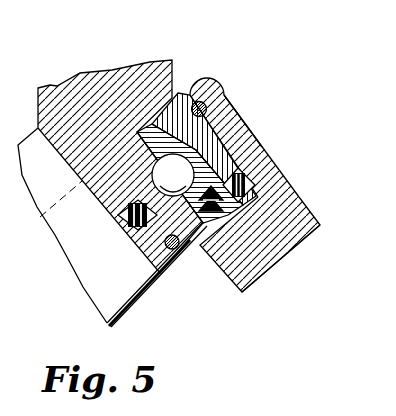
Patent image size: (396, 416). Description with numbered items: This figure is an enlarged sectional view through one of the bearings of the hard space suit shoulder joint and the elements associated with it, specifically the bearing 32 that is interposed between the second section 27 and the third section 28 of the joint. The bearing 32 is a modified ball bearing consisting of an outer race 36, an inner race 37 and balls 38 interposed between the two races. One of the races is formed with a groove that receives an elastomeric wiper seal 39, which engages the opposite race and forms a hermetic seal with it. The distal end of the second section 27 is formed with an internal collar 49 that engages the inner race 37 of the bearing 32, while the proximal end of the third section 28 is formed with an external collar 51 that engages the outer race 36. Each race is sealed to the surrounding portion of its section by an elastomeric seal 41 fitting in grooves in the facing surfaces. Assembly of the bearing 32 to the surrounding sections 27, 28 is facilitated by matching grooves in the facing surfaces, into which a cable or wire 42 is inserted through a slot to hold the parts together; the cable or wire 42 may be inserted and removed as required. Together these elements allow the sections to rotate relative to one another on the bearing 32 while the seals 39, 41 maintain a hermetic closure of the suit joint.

The second section 27 is at (101, 88).
The third section 28 is at (298, 198).
The bearing 32 is at (221, 108).
The outer race 36 is at (148, 263).
The inner race 37 is at (208, 158).
The balls 38 is at (222, 180).
The elastomeric wiper seal 39 is at (267, 255).
The elastomeric seal 41 is at (250, 183).
The cable or wire 42 is at (194, 101).
The internal collar 49 is at (108, 216).
The external collar 51 is at (235, 118).